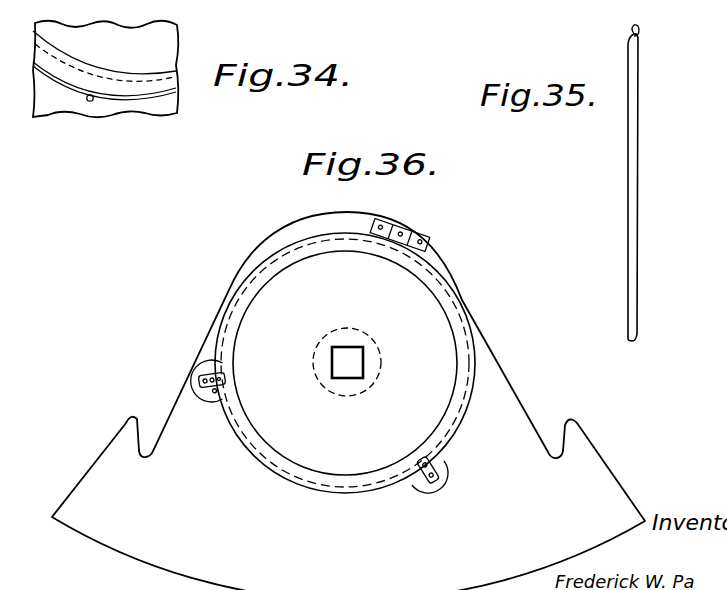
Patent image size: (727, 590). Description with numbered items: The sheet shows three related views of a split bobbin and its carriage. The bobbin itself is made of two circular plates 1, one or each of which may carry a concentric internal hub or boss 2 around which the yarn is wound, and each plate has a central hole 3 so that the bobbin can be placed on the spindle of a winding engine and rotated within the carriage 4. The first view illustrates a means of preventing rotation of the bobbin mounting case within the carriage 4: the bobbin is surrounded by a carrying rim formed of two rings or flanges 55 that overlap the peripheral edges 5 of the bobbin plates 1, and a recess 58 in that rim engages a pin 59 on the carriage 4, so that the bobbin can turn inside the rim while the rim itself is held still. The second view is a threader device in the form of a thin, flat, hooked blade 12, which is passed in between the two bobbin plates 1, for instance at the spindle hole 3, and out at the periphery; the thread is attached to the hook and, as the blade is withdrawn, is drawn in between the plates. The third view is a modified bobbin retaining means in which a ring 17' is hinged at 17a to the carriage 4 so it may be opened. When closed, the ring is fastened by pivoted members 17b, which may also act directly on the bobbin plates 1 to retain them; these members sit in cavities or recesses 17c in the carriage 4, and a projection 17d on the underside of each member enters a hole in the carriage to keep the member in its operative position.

In FIG. 34, the circular plates 1 is at (104, 50).
In FIG. 36, the circular plates 1 is at (345, 363).
In FIG. 36, the internal hub or boss 2 is at (382, 378).
In FIG. 36, the hole 3 is at (347, 362).
In FIG. 34, the carriage 4 is at (178, 108).
In FIG. 36, the carriage 4 is at (348, 401).
In FIG. 34, the peripheral edges 5 is at (60, 54).
In FIG. 35, the hooked blade 12 is at (632, 162).
In FIG. 34, the rings or flanges 55 is at (147, 81).
In FIG. 34, the recess 58 is at (92, 95).
In FIG. 34, the pin 59 is at (88, 101).
In FIG. 36, the ring 17' is at (345, 363).
In FIG. 36, the hinge 17a is at (430, 233).
In FIG. 36, the pivoted members 17b is at (228, 381).
In FIG. 36, the cavities or recesses 17c is at (213, 405).
In FIG. 36, the projection 17d is at (203, 381).